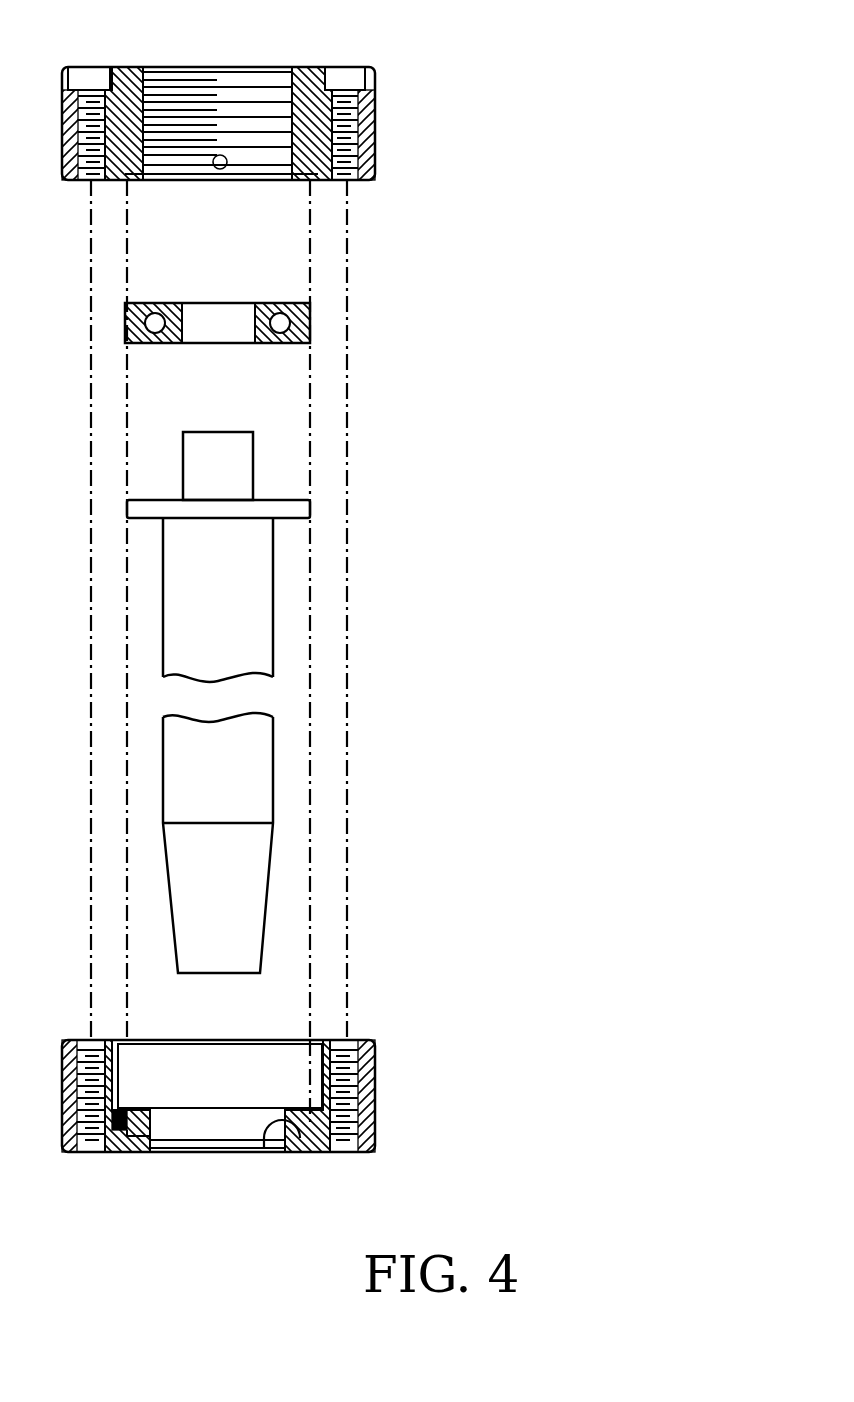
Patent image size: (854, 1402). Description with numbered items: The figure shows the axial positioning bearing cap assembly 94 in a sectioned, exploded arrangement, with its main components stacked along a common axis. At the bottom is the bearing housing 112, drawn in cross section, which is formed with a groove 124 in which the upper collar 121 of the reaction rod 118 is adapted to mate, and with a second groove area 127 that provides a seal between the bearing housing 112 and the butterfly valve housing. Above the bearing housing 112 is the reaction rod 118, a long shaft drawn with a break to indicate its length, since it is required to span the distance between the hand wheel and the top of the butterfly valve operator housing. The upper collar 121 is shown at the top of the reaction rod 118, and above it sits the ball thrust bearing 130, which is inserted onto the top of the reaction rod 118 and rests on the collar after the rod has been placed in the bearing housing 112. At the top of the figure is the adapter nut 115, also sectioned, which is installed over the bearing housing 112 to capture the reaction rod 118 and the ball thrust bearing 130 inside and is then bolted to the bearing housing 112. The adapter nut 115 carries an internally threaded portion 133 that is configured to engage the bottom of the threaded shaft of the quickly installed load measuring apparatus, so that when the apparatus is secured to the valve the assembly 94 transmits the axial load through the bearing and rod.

The axial positioning bearing cap assembly 94 is at (388, 561).
The bearing housing 112 is at (375, 1082).
The adapter nut 115 is at (375, 134).
The reaction rod 118 is at (243, 628).
The upper collar 121 is at (310, 508).
The groove 124 is at (265, 1152).
The second groove area 127 is at (170, 1152).
The ball thrust bearing 130 is at (310, 323).
The internally threaded portion 133 is at (169, 155).